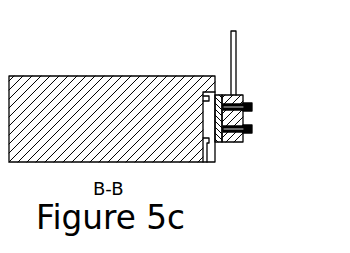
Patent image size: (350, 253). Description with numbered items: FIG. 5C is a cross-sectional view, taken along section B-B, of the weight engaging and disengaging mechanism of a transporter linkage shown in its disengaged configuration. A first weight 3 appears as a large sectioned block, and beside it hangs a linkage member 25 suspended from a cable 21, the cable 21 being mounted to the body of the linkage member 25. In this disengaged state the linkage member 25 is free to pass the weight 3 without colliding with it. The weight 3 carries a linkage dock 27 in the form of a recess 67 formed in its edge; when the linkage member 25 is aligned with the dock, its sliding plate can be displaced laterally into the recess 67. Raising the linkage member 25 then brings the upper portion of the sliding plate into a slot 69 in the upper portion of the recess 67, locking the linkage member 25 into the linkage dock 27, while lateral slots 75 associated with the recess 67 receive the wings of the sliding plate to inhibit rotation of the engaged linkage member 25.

The first weight 3 is at (33, 77).
The cable 21 is at (237, 44).
The linkage member 25 is at (242, 144).
The linkage dock 27 is at (223, 133).
The recess 67 is at (212, 113).
The slot 69 is at (205, 93).
The lateral slots 75 is at (204, 128).